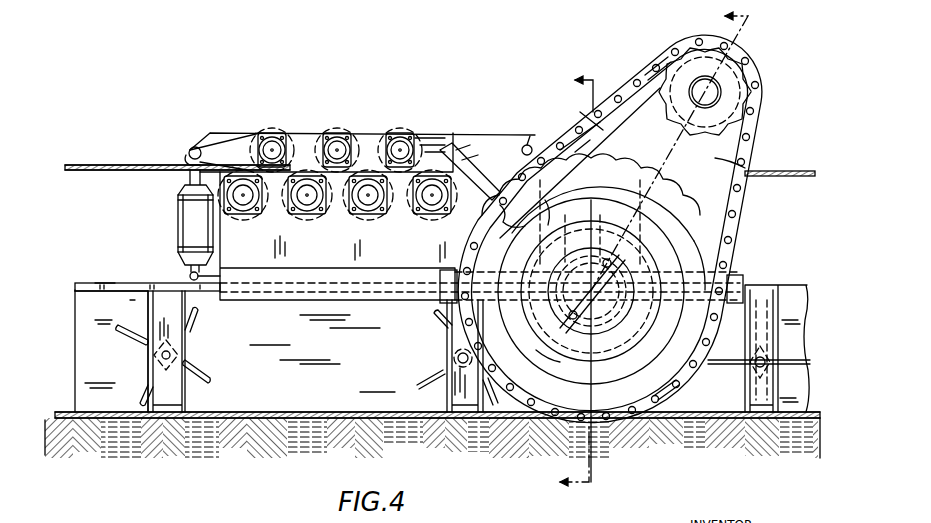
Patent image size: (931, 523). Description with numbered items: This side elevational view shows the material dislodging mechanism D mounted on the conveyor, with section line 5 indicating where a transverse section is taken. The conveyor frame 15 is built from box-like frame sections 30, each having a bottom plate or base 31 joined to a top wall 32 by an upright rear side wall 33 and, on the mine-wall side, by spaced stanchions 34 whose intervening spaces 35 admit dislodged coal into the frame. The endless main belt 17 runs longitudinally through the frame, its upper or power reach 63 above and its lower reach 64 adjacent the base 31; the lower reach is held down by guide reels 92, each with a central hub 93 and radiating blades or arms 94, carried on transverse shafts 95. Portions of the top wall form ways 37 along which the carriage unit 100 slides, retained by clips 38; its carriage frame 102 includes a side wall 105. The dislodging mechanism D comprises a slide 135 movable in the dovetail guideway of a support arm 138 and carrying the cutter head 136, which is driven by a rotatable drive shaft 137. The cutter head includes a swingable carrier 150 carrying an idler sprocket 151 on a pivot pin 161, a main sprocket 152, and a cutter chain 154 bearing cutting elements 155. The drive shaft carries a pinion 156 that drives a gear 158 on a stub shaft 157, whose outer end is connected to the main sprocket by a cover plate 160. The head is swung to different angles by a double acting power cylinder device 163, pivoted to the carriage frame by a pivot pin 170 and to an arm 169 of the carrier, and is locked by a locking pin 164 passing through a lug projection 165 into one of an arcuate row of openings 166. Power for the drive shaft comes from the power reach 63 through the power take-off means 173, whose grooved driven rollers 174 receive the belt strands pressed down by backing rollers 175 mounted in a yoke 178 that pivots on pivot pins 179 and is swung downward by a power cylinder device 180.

The section line 5- 5 is at (643, 250).
The conveyor frame 15 is at (105, 283).
The endless main belt 17 is at (98, 165).
The frame sections 30 is at (75, 300).
The bottom plate or base 31 is at (108, 418).
The top wall 32 is at (115, 293).
The rear side wall 33 is at (88, 322).
The stanchions 34 is at (185, 397).
The spaces 35 is at (356, 422).
The ways 37 is at (125, 283).
The clips 38 is at (302, 302).
The upper or power reach 63 is at (128, 165).
The lower reach 64 is at (291, 412).
The guide reels 92 is at (212, 372).
The central hub 93 is at (178, 350).
The blades or arms 94 is at (143, 390).
The shafts 95 is at (166, 362).
The carriage unit 100 is at (487, 126).
The carriage frame 102 is at (418, 215).
The side wall 105 is at (237, 237).
The slide 135 is at (551, 252).
The cutter head 136 is at (720, 160).
The drive shaft 137 is at (549, 202).
The support arm 138 is at (536, 215).
The carrier 150 is at (608, 97).
The idler sprocket 151 is at (603, 126).
The main sprocket 152 is at (598, 143).
The cutter chain 154 is at (752, 75).
The cutting elements 155 is at (676, 50).
The pinion 156 is at (620, 190).
The stub shaft 157 is at (640, 325).
The gear 158 is at (560, 333).
The cover plate 160 is at (591, 340).
The pivot pin 161 is at (716, 95).
The double acting power cylinder device 163 is at (468, 217).
The locking pin 164 is at (672, 246).
The lug projection 165 is at (660, 220).
The arcuate row of openings 166 is at (655, 358).
The arm 169 is at (538, 345).
The pivot pin 170 is at (447, 133).
The power take-off means 173 is at (335, 130).
The driven rollers 174 is at (245, 162).
The backing rollers 175 is at (272, 128).
The yoke 178 is at (366, 136).
The pivot pins 179 is at (530, 144).
The power cylinder device 180 is at (186, 212).
The material dislodging mechanism D is at (566, 135).